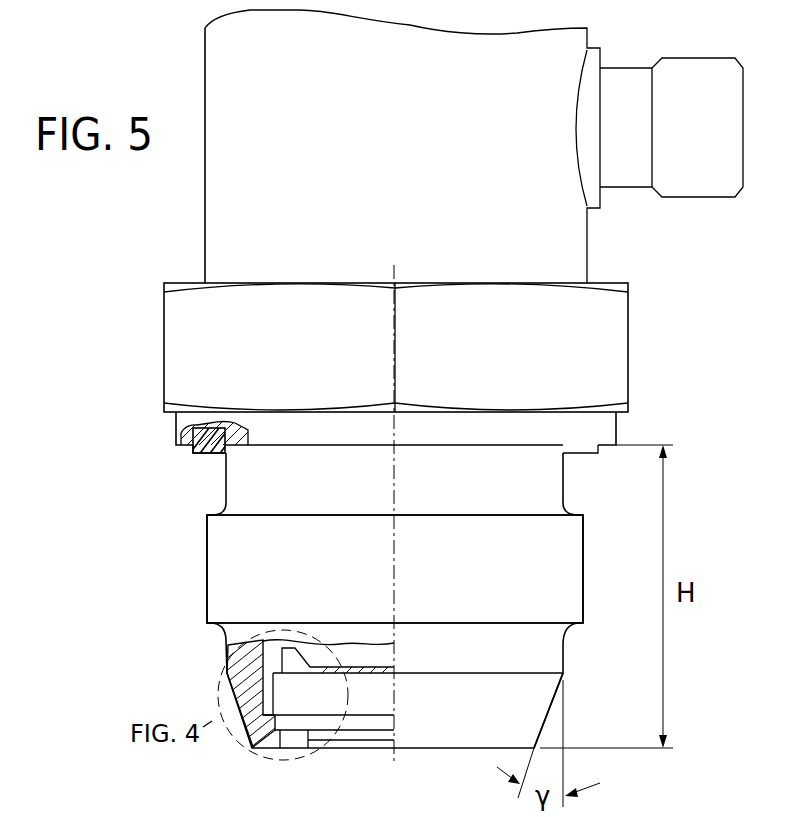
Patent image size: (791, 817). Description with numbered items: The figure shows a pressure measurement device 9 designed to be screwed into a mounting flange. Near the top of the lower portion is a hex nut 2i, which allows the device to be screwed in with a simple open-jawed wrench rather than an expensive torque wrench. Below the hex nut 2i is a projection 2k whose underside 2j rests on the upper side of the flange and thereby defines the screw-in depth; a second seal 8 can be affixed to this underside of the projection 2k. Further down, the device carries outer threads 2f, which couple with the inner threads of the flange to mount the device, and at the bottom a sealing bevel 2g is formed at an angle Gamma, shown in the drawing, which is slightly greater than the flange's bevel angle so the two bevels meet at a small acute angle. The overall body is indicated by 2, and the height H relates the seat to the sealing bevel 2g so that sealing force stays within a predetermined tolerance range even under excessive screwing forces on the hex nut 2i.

The pressure measurement device 9 is at (575, 249).
The hex nut 2i is at (617, 330).
The projection 2k is at (181, 427).
The underside of the projection 2j is at (186, 446).
The second seal 8 is at (201, 452).
The housing 2 is at (381, 600).
The outer threads 2f is at (583, 565).
The sealing bevel 2g is at (553, 708).